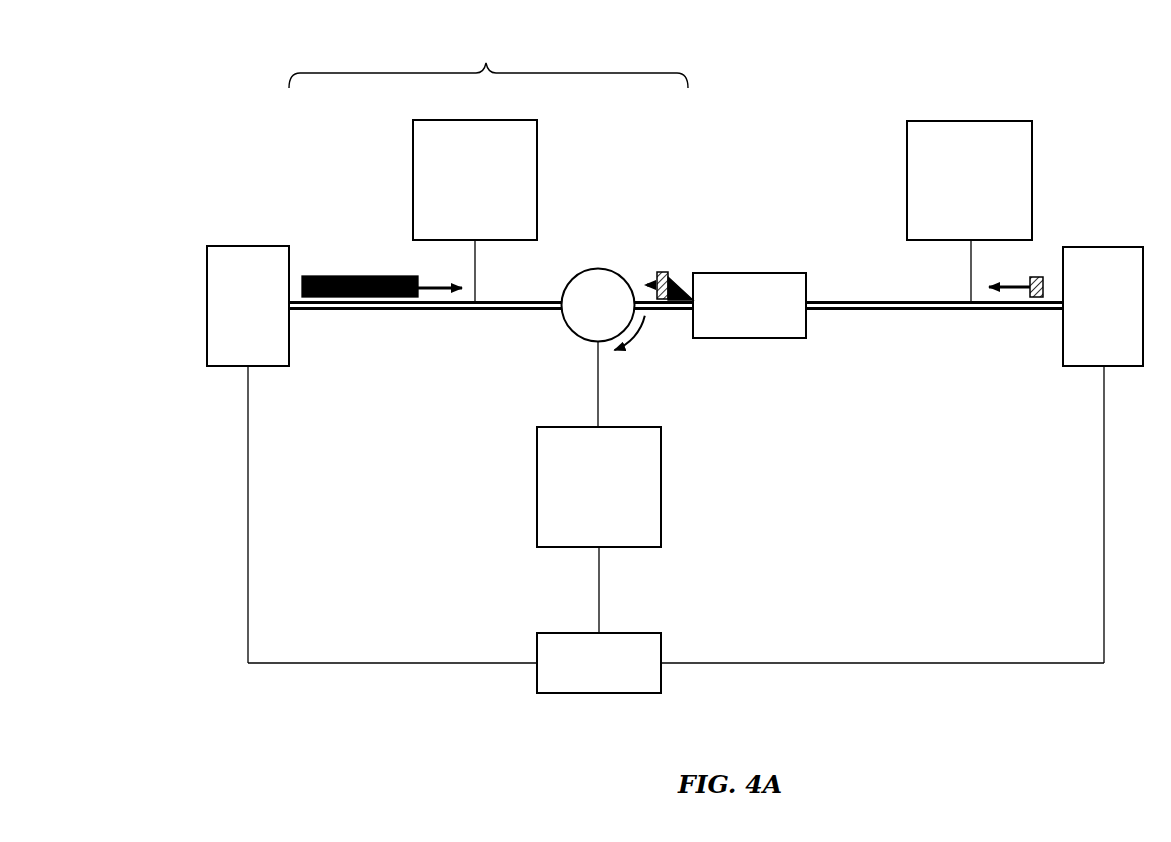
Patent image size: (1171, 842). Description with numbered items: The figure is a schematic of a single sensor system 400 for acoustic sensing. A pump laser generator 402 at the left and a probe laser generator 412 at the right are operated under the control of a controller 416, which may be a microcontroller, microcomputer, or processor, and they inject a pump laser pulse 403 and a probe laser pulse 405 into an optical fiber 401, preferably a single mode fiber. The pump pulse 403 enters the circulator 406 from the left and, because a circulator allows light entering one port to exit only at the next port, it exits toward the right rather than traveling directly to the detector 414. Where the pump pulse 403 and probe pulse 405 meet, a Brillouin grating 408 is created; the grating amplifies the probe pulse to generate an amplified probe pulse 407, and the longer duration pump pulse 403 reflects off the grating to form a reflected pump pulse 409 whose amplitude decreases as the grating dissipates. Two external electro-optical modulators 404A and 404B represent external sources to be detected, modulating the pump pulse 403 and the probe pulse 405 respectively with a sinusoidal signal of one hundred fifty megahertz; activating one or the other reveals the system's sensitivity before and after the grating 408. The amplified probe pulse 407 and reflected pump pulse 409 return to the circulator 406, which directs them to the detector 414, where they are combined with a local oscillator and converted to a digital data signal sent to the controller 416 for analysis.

The single sensor system 400 is at (125, 82).
The optical fiber 401 is at (468, 319).
The pump laser generator 402 is at (248, 306).
The pump laser pulse 403 is at (362, 274).
The external electro-optical modulator 404A is at (475, 211).
The external electro-optical modulator 404B is at (969, 211).
The probe laser pulse 405 is at (1036, 272).
The circulator 406 is at (603, 310).
The amplified probe pulse 407 is at (661, 270).
The Brillouin grating 408 is at (749, 305).
The reflected pump pulse 409 is at (679, 277).
The probe laser generator 412 is at (1103, 306).
The detector 414 is at (599, 444).
The controller 416 is at (676, 529).